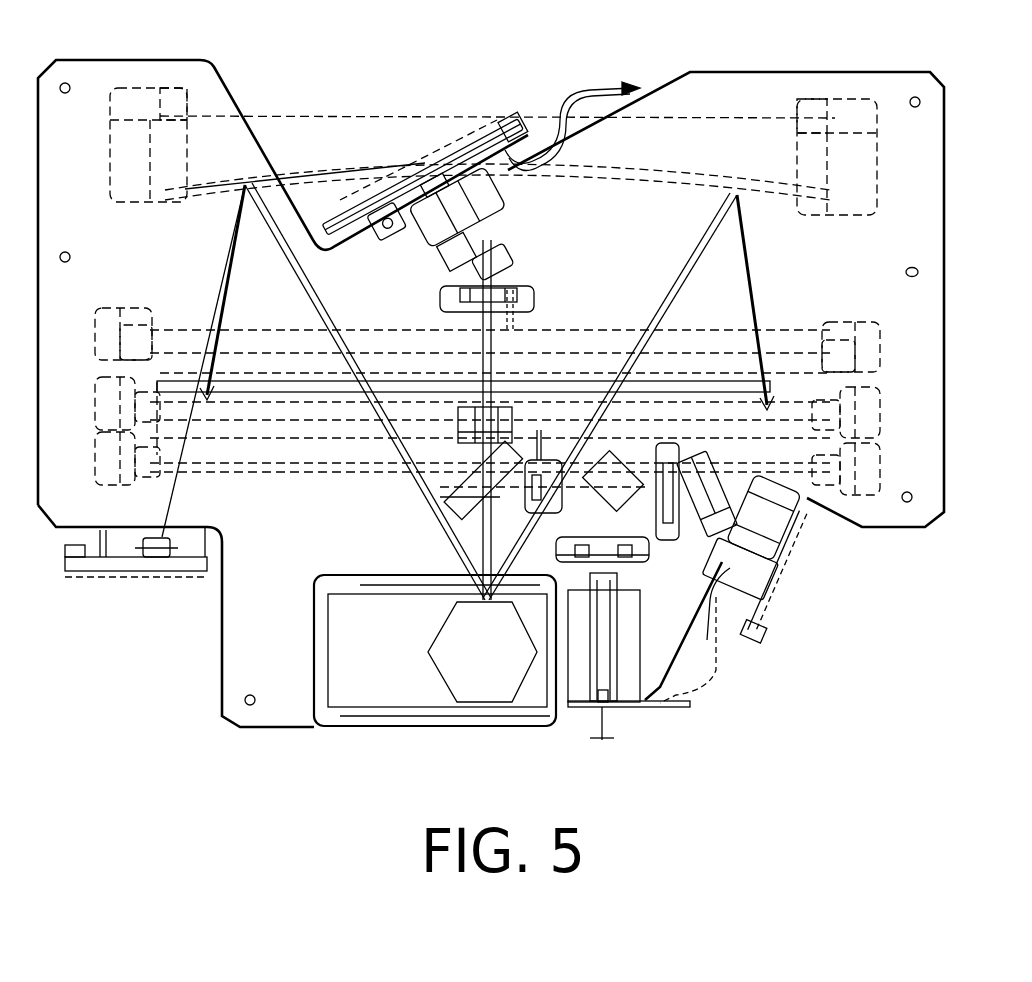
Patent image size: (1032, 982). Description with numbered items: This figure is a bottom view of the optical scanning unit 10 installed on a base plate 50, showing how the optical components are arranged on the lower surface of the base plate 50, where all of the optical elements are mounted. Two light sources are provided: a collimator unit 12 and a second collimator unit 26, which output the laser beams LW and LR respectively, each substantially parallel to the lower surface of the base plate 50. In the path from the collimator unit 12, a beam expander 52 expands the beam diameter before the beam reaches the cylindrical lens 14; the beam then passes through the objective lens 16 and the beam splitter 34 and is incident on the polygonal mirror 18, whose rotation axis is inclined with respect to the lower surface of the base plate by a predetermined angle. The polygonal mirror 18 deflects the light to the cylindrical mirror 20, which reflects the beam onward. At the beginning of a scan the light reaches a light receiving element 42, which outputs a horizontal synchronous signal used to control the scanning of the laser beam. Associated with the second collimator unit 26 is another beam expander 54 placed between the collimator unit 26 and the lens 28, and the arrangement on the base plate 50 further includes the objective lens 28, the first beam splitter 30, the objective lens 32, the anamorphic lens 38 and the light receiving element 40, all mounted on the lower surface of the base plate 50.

The scanning optical system 10 is at (957, 165).
The collimator unit 12 is at (510, 192).
The cylindrical lens 14 is at (536, 302).
The objective lens 16 is at (512, 420).
The polygonal mirror 18 is at (473, 700).
The cylindrical mirror 20 is at (768, 213).
The collimator unit 26 is at (758, 596).
The objective lens 28 is at (666, 545).
The first beam splitter 30 is at (620, 462).
The objective lens 32 is at (565, 518).
The beam splitter 34 is at (445, 515).
The anamorphic lens 38 is at (623, 637).
The light receiving element 40 is at (606, 710).
The light receiving element 42 is at (137, 573).
The base plate 50 is at (790, 72).
The beam expander 52 is at (514, 266).
The beam expander 54 is at (716, 630).